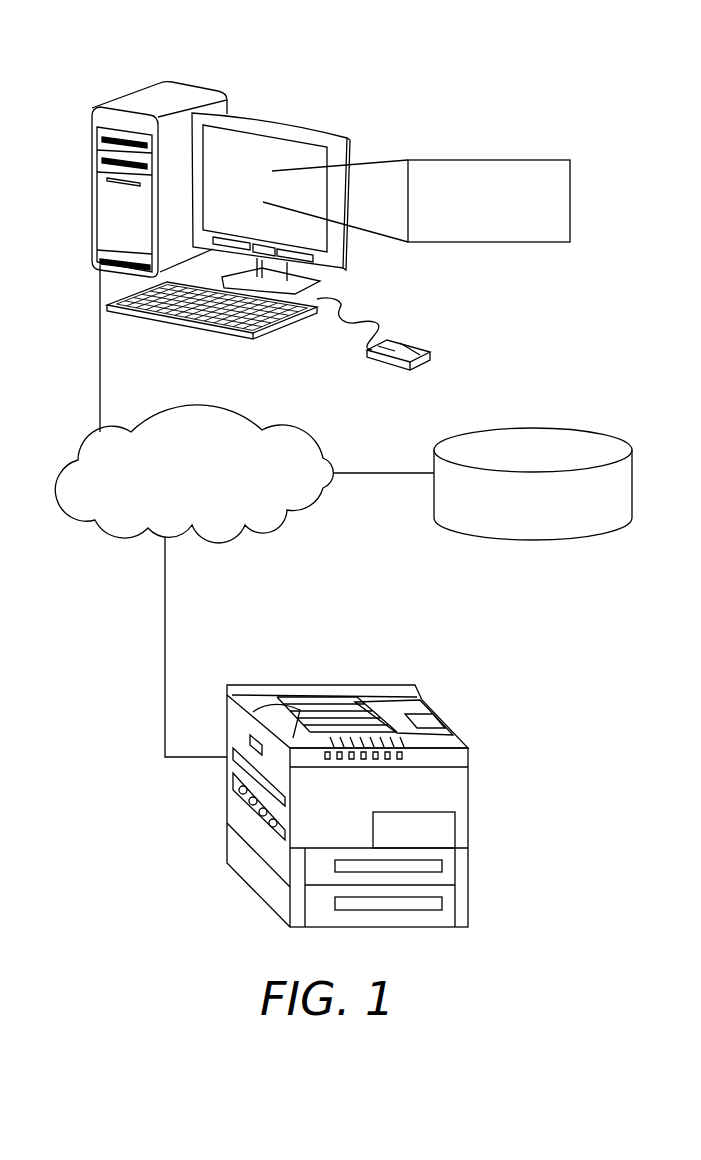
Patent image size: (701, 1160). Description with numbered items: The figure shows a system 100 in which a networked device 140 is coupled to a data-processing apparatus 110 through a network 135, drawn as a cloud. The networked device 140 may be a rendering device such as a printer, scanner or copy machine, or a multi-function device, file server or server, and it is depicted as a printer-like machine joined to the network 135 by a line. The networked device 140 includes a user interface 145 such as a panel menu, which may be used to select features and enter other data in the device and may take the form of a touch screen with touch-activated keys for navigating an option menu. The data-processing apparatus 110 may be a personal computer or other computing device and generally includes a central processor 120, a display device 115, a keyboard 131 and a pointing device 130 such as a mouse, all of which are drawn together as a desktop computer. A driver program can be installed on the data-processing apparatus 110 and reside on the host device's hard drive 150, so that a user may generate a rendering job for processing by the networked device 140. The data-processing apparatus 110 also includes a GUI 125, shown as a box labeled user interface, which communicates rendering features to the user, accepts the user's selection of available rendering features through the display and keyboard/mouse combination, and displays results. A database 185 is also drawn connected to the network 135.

The system 100 is at (433, 58).
The hard drive 150 is at (127, 92).
The central processor 120 is at (97, 265).
The display device 115 is at (270, 113).
The data-processing apparatus 110 is at (292, 153).
The GUI 125 is at (517, 160).
The keyboard 131 is at (182, 315).
The pointing device 130 is at (410, 340).
The network 135 is at (227, 412).
The database 185 is at (573, 428).
The networked device 140 is at (363, 685).
The user interface 145 is at (393, 737).